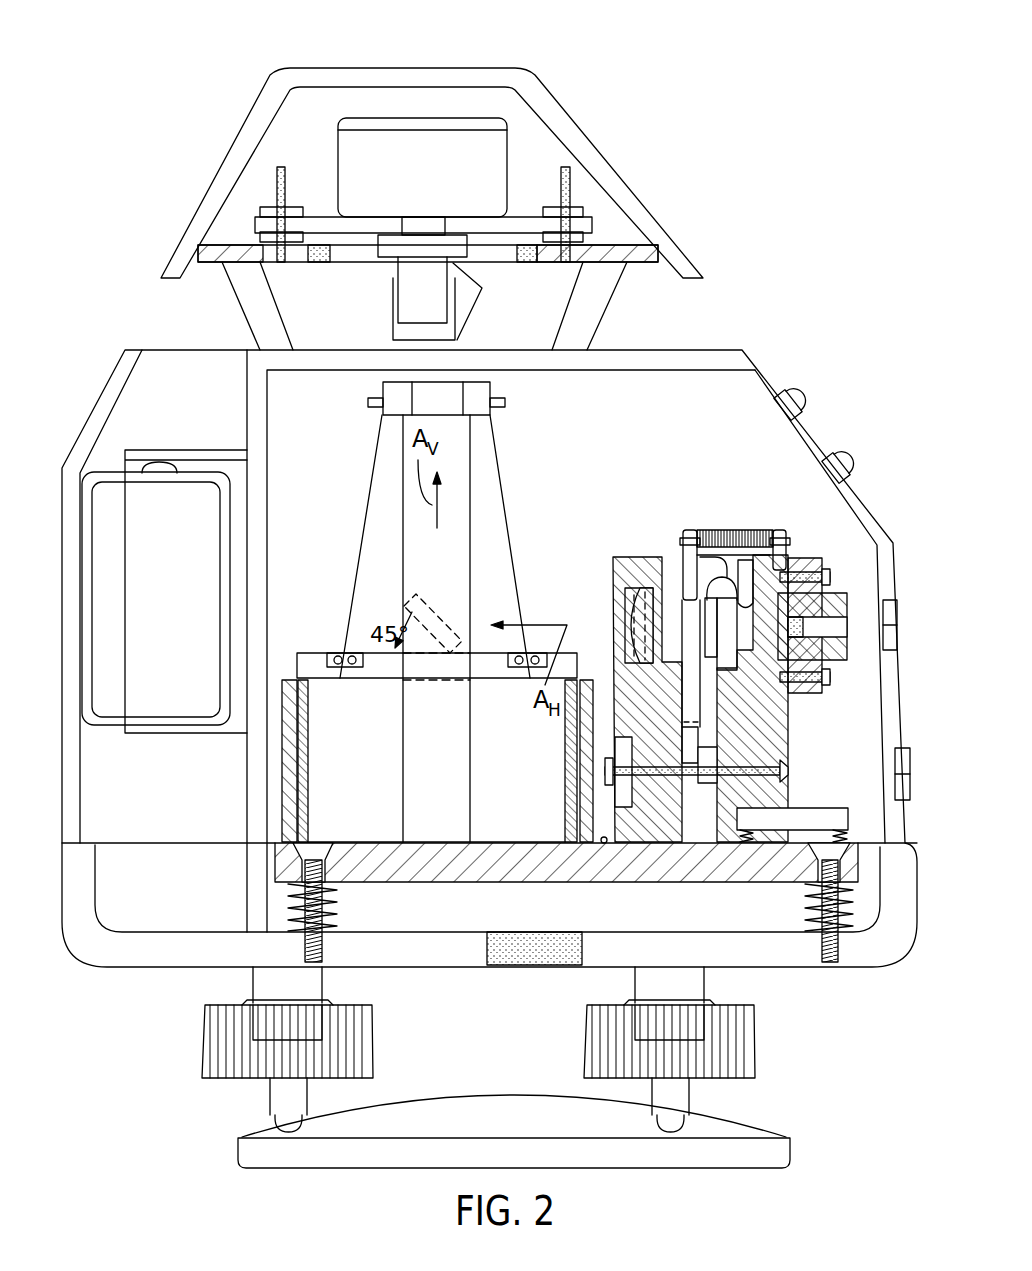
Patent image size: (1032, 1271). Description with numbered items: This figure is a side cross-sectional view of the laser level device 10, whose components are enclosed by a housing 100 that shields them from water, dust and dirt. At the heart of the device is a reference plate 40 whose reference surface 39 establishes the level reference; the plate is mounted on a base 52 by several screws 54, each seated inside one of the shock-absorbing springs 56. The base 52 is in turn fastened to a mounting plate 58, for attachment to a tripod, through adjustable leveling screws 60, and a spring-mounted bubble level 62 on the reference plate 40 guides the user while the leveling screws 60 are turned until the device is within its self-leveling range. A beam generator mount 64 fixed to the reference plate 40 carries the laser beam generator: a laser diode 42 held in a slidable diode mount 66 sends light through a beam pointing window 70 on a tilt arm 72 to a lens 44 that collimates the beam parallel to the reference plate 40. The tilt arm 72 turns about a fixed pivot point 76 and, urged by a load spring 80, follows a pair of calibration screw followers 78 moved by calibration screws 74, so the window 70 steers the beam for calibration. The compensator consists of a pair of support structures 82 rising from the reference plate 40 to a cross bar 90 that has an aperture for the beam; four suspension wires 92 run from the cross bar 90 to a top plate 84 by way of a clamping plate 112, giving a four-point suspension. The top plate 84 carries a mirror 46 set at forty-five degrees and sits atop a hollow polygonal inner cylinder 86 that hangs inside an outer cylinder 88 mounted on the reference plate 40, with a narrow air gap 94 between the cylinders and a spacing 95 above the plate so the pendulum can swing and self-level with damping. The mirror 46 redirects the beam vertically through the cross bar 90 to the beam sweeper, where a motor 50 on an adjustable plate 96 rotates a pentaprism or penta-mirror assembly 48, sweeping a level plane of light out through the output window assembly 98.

The laser level device 10 is at (812, 63).
The reference surface 39 is at (608, 843).
The reference plate 40 is at (767, 882).
The laser diode 42 is at (803, 623).
The lens 44 is at (640, 583).
The mirror 46 is at (430, 608).
The pentaprism or penta-mirror assembly 48 is at (477, 303).
The motor 50 is at (508, 152).
The base 52 is at (882, 945).
The screws 54 is at (323, 947).
The springs 56 is at (338, 917).
The mounting plate 58 is at (765, 1140).
The leveling screws 60 is at (373, 1057).
The bubble level 62 is at (848, 813).
The beam generator mount 64 is at (612, 655).
The diode mount 66 is at (847, 647).
The beam pointing window 70 is at (718, 620).
The tilt arm 72 is at (720, 710).
The calibration screws 74 is at (788, 763).
The pivot point 76 is at (728, 556).
The calibration screw followers 78 is at (720, 753).
The load spring 80 is at (740, 530).
The support structures 82 is at (470, 493).
The top plate 84 is at (310, 653).
The inner cylinder 86 is at (310, 762).
The outer cylinder 88 is at (280, 797).
The cross bar 90 is at (490, 383).
The suspension wires 92 is at (372, 472).
The air gap 94 is at (283, 658).
The spacing 95 is at (507, 838).
The plate 96 is at (525, 215).
The output window assembly 98 is at (240, 310).
The housing 100 is at (103, 393).
The clamping plate 112 is at (343, 653).